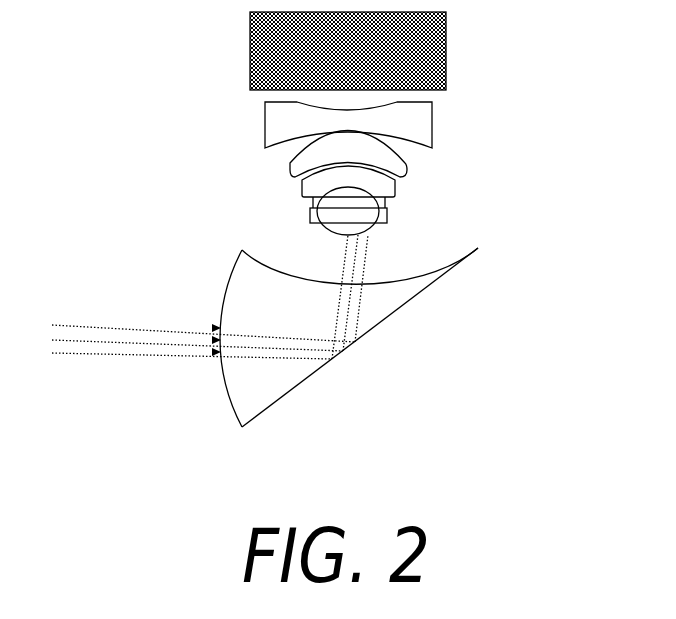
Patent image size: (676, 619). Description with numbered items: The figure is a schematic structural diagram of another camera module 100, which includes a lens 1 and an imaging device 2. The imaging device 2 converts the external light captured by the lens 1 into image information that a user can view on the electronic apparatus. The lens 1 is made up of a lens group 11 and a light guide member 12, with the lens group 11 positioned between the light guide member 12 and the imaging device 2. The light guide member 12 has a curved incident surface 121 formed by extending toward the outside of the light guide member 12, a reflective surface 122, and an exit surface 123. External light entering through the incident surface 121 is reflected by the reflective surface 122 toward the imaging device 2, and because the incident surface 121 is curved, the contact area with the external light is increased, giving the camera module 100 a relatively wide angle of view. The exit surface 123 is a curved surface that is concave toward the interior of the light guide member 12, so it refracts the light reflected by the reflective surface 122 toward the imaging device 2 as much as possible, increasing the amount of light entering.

The camera module 100 is at (228, 191).
The imaging device 2 is at (447, 24).
The lens 1 is at (540, 165).
The lens group 11 is at (433, 108).
The light guide member 12 is at (400, 283).
The incident surface 121 is at (218, 270).
The reflective surface 122 is at (288, 406).
The exit surface 123 is at (312, 267).